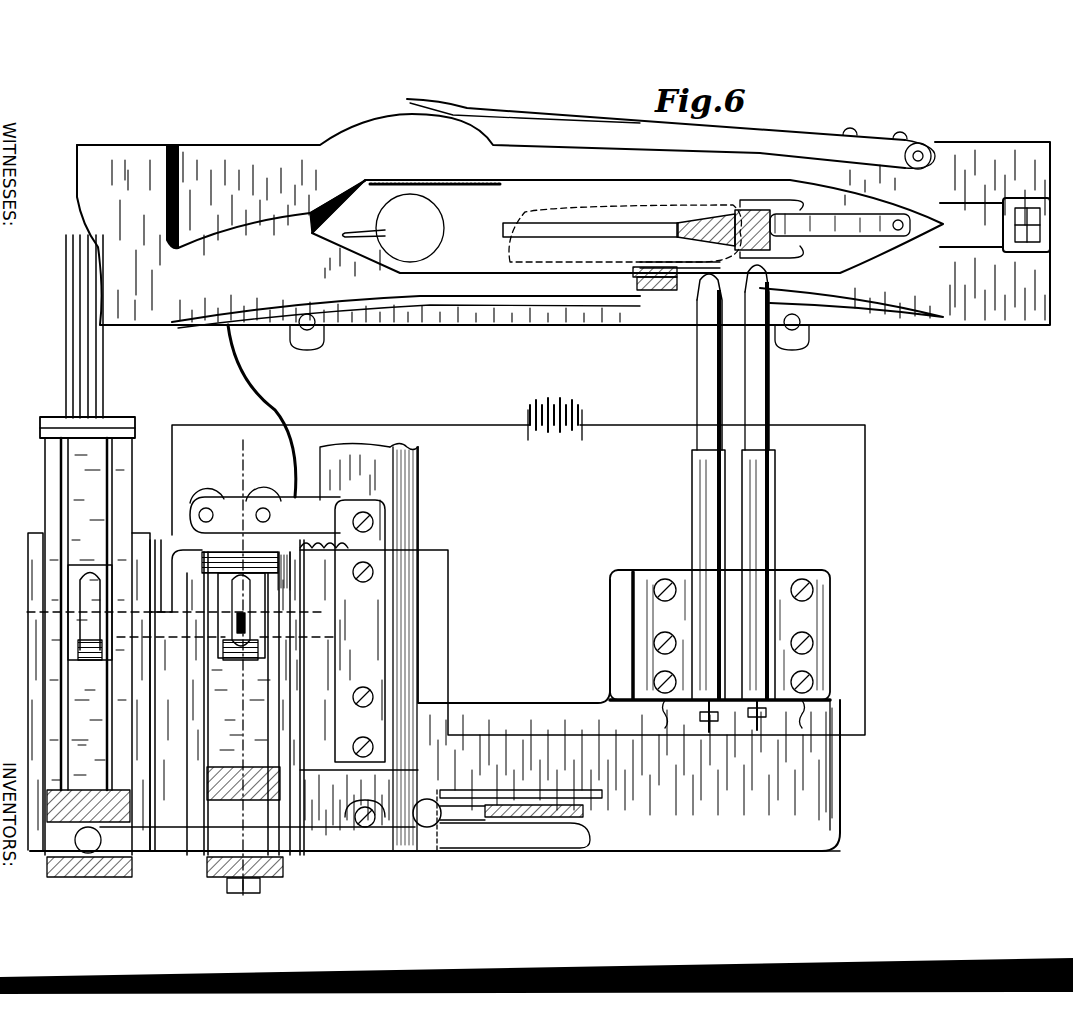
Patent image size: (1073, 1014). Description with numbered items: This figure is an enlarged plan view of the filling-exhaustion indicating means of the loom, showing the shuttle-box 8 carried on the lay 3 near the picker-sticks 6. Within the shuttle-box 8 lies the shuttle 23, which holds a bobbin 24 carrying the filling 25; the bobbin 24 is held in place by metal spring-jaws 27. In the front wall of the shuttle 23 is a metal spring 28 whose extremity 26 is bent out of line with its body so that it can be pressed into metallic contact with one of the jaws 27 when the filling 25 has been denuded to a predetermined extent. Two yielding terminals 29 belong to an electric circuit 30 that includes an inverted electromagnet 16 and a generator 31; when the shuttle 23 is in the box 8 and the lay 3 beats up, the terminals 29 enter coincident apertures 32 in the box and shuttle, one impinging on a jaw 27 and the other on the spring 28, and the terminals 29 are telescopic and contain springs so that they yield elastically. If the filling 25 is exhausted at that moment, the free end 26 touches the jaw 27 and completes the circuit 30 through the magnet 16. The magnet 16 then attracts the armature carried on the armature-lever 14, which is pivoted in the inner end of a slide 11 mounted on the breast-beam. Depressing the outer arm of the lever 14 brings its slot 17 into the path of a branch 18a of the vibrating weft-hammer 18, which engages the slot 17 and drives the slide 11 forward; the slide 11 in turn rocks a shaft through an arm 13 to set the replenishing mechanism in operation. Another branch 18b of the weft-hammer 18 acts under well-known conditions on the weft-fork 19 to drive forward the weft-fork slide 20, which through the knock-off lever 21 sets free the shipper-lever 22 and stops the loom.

The lay 3 is at (563, 232).
The picker-sticks 6 is at (1004, 228).
The shuttle-box 8 is at (671, 128).
The slide 11 is at (227, 708).
The arm 13 is at (262, 887).
The armature-lever 14 is at (280, 583).
The electromagnet 16 is at (262, 498).
The slot or aperture 17 is at (237, 590).
The weft-hammer 18 is at (256, 398).
The branch of the weft-hammer 18a is at (247, 622).
The branch of the weft-hammer 18b is at (90, 631).
The weft-fork 19 is at (68, 392).
The weft-fork slide 20 is at (89, 657).
The knock-off lever 21 is at (390, 852).
The shipper-lever 22 is at (514, 812).
The shuttle 23 is at (419, 227).
The bobbin 24 is at (625, 228).
The filling 25 is at (575, 215).
The extremity of the spring 26 is at (742, 308).
The spring-jaws 27 is at (790, 202).
The spring 28 is at (636, 270).
The yielding terminals 29 is at (762, 388).
The electric circuit 30 is at (370, 428).
The generator 31 is at (560, 412).
The apertures 32 is at (683, 272).